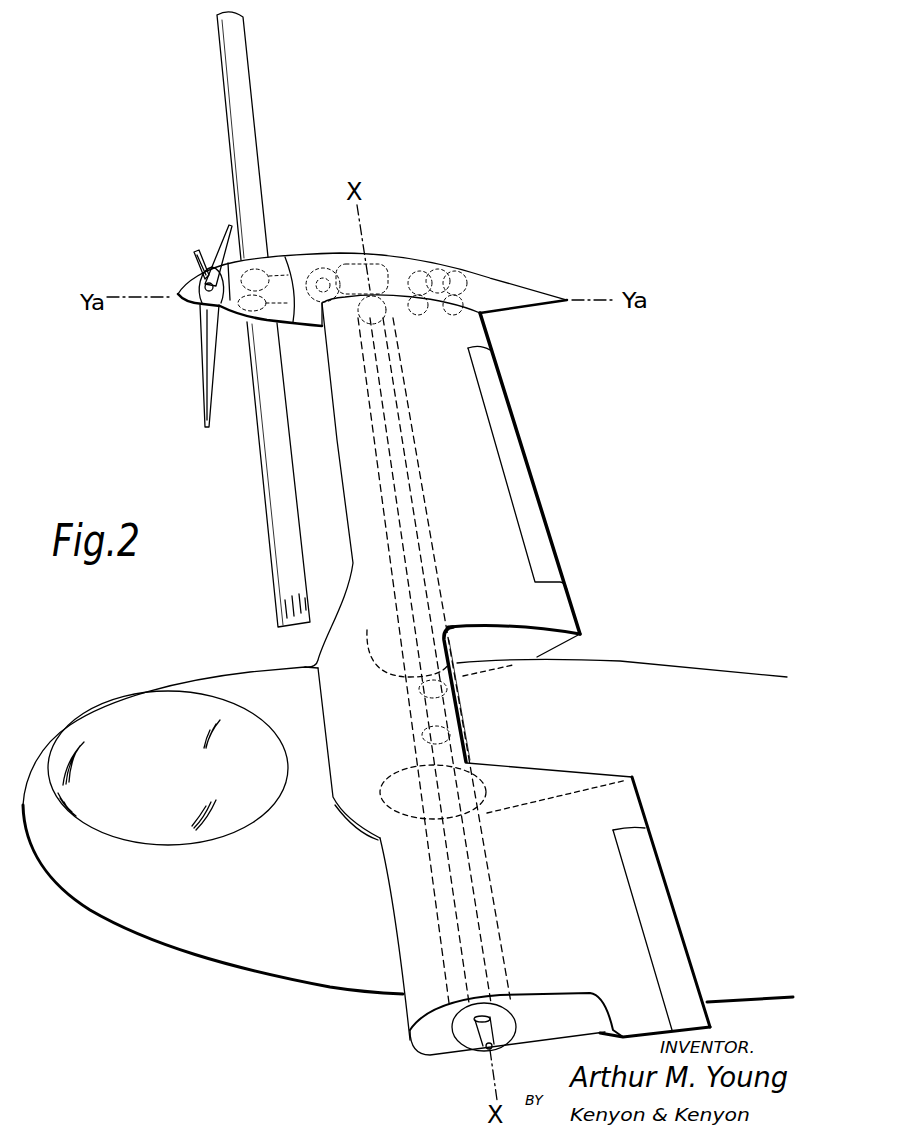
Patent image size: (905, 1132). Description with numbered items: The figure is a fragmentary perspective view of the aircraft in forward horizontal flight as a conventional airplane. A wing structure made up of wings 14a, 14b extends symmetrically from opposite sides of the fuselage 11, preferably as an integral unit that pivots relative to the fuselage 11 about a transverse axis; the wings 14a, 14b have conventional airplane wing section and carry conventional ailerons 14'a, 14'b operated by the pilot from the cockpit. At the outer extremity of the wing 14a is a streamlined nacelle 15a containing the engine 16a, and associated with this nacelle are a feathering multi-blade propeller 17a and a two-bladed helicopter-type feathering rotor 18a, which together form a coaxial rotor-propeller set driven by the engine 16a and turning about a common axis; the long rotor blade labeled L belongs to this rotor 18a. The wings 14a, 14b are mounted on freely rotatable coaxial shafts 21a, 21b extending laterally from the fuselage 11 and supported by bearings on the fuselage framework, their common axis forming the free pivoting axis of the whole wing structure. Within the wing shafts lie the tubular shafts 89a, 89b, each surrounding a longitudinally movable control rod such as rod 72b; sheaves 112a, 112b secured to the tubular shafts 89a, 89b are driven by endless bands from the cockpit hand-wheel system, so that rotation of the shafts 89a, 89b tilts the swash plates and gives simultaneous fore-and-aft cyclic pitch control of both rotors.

The fuselage 11 is at (251, 945).
The wing 14a is at (497, 503).
The aileron 14'a is at (517, 468).
The wing 14b is at (603, 822).
The aileron 14'b is at (663, 928).
The nacelle 15a is at (397, 257).
The engine 16a is at (440, 272).
The propeller 17a is at (197, 325).
The rotor 18a is at (272, 218).
The shaft 21a is at (380, 490).
The shaft 21b is at (437, 920).
The rotatable sleeve 89a is at (427, 590).
The tubular shaft 89b is at (477, 913).
The sheave 112a is at (418, 690).
The sheave 112b is at (420, 735).
The longitudinally movable rod 72b is at (485, 1040).
The rotor blade L is at (225, 92).